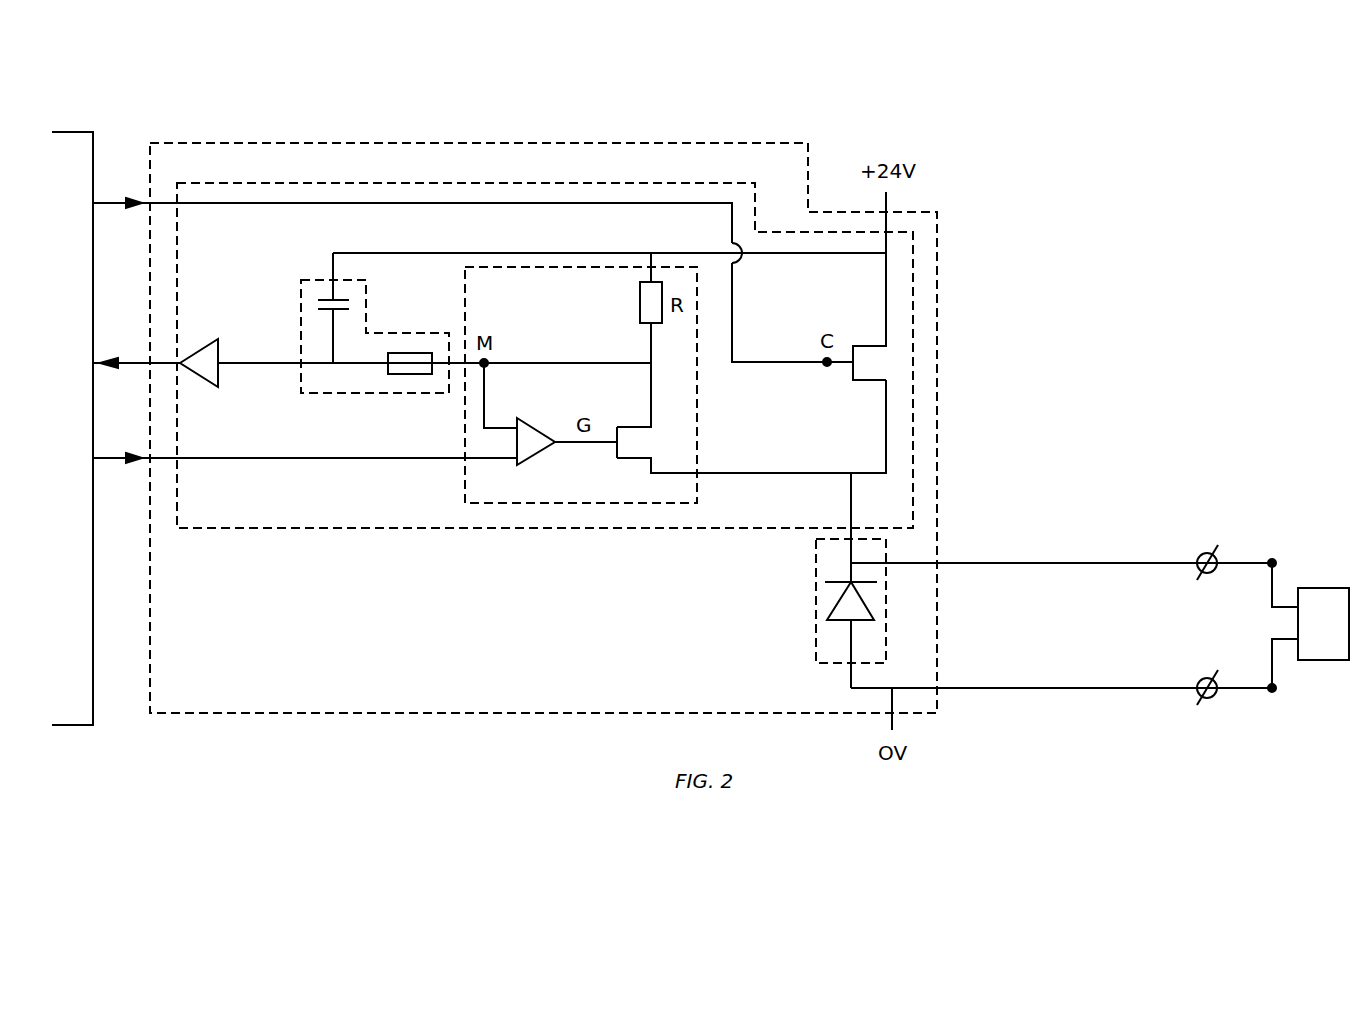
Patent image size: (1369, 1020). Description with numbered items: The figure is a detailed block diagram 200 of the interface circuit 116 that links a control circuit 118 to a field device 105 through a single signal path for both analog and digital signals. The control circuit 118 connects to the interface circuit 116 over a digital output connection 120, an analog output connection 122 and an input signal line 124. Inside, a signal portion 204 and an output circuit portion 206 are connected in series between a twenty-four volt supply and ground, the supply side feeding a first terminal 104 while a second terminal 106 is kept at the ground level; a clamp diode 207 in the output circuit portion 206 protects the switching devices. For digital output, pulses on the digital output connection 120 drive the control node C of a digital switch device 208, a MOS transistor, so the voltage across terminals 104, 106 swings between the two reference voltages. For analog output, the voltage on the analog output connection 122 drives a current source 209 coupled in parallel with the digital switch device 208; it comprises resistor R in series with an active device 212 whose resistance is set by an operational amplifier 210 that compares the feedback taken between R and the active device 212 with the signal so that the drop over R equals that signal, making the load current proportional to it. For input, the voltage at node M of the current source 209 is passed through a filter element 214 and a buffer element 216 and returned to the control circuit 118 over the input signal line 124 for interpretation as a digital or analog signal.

The control circuit 118 is at (93, 132).
The interface circuit 116 is at (478, 143).
The digital output connection 120 is at (473, 269).
The input signal line 124 is at (136, 352).
The analog output connection 122 is at (305, 447).
The signal portion 204 is at (345, 530).
The buffer element 216 is at (218, 382).
The filter element 214 is at (301, 284).
The current source 209 is at (465, 284).
The operational amplifier 210 is at (527, 462).
The active device 212 is at (638, 408).
The digital switch device 208 is at (900, 362).
The output circuit portion 206 is at (826, 665).
The clamp diode 207 is at (833, 605).
The first terminal 104 is at (1272, 563).
The field device 105 is at (1310, 625).
The second terminal 106 is at (1272, 688).
The block diagram 200 is at (996, 753).